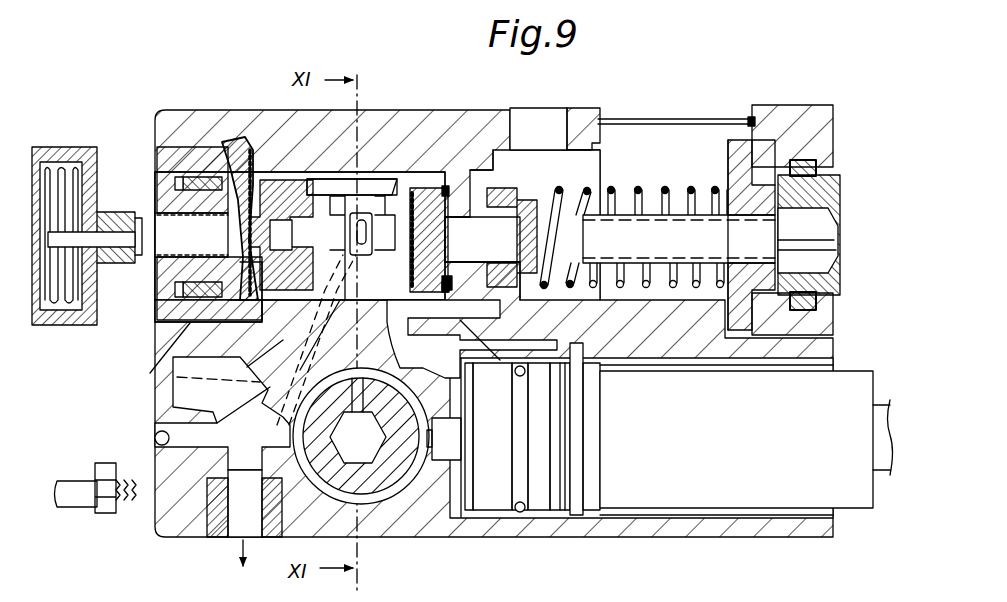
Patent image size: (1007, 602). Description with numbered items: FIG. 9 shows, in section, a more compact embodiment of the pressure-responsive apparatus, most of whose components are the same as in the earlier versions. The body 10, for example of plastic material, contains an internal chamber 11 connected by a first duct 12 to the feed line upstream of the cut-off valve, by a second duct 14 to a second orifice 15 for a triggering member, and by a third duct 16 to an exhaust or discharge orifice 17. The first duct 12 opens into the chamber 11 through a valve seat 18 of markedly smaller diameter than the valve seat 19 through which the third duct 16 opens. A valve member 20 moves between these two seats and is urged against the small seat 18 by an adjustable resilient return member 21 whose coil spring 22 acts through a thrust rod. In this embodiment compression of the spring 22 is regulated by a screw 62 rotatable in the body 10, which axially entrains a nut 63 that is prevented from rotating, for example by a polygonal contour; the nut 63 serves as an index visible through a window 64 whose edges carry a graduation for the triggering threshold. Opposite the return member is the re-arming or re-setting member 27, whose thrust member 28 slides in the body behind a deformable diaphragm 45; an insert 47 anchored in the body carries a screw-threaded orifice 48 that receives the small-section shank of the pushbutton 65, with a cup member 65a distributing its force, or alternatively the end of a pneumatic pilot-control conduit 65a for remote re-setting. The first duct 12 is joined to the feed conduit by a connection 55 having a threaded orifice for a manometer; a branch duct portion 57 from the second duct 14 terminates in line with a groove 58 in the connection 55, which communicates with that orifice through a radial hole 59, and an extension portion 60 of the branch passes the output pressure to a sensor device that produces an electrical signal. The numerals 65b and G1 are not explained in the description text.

The body 10 is at (178, 124).
The re-arming or re-setting member 27 is at (140, 118).
The deformable diaphragm 45 is at (242, 165).
The thrust member 28 is at (343, 187).
The first duct 12 is at (363, 213).
The valve seat 18 is at (403, 222).
The valve member 20 is at (438, 190).
The exhaust or discharge orifice 17 is at (546, 130).
The window 64 is at (633, 118).
The coil spring 22 is at (655, 240).
The screw 62 is at (690, 235).
The resilient return member 21 is at (850, 206).
The screw-threaded orifice 48 is at (176, 208).
The cup member 65a is at (231, 233).
The third duct 16 is at (465, 225).
The valve seat 19 is at (447, 283).
The nut 63 is at (736, 311).
The insert 47 is at (172, 298).
The pushbutton 65 is at (58, 334).
The second duct 14 is at (162, 385).
The internal chamber 11 is at (398, 323).
The branch duct portion 57 is at (283, 437).
The radial hole 59 is at (358, 420).
The screw 65b is at (82, 508).
The second orifice 15 is at (237, 530).
The groove 58 is at (296, 532).
The connection 55 is at (372, 524).
The extension portion 60 is at (447, 524).
The housing G1 is at (677, 430).